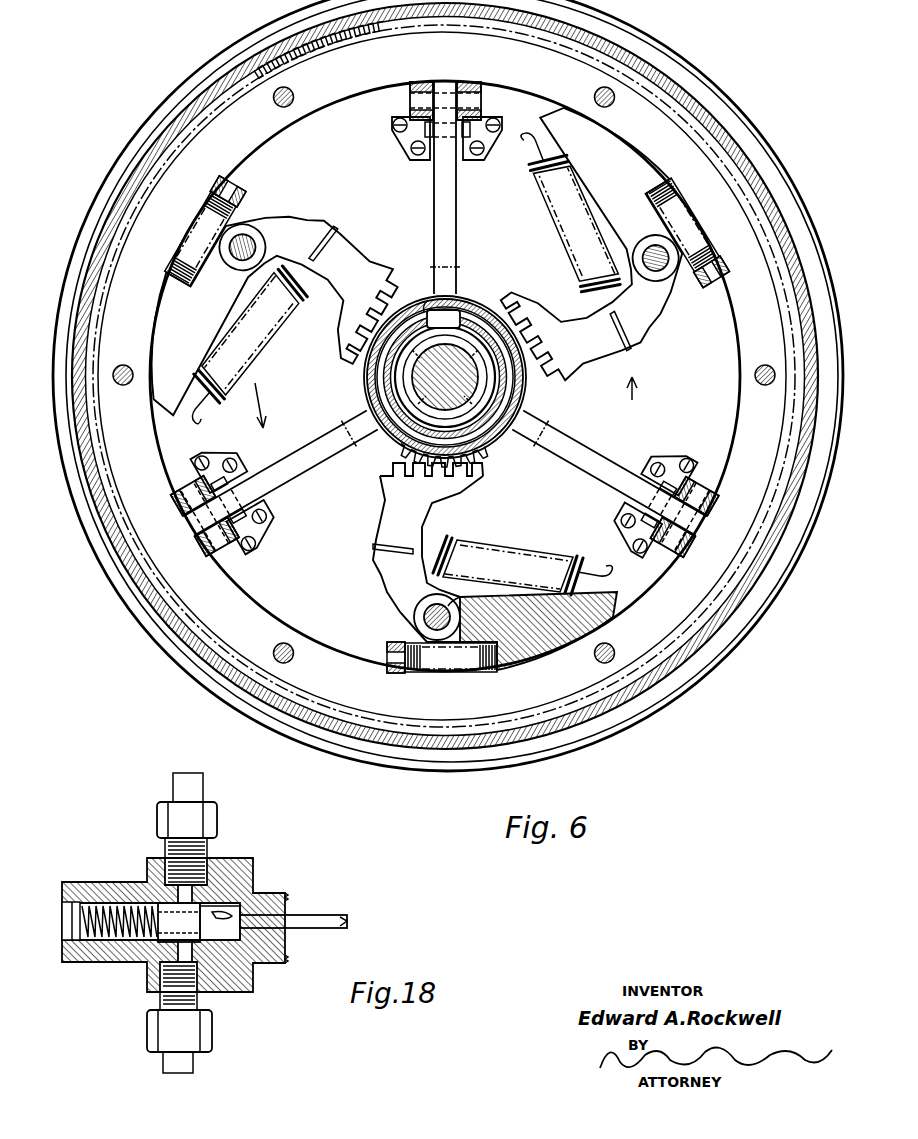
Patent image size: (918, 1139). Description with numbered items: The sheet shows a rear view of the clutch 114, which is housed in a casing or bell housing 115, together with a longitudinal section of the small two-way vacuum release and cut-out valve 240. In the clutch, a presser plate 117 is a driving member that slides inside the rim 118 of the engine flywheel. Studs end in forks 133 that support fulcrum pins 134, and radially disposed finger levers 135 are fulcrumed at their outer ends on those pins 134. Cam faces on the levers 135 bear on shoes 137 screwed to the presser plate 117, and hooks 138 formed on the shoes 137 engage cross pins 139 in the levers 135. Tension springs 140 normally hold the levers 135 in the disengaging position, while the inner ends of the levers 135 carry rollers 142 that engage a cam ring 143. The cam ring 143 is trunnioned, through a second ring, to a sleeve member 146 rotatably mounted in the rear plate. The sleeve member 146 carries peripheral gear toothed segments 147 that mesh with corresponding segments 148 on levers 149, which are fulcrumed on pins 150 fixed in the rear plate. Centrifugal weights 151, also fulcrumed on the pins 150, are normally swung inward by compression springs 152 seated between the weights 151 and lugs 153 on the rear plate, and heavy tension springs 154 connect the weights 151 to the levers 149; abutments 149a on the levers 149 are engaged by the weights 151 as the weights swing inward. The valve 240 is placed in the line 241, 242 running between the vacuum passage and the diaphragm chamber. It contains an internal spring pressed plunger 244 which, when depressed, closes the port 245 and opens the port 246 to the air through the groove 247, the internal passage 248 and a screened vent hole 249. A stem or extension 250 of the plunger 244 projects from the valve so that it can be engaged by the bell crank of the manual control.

In FIG. 6, the clutch 114 is at (222, 557).
In FIG. 6, the casing or bell housing 115 is at (258, 667).
In FIG. 6, the presser plate 117 is at (258, 580).
In FIG. 6, the rim 118 is at (328, 683).
In FIG. 6, the forks 133 is at (458, 74).
In FIG. 6, the fulcrum pins 134 is at (468, 109).
In FIG. 6, the finger levers 135 is at (468, 188).
In FIG. 6, the shoes 137 is at (401, 138).
In FIG. 6, the hooks 138 is at (482, 149).
In FIG. 6, the cross pins 139 is at (477, 121).
In FIG. 6, the tension springs 140 is at (467, 256).
In FIG. 6, the rollers 142 is at (455, 312).
In FIG. 6, the cam ring 143 is at (428, 298).
In FIG. 6, the sleeve member 146 is at (366, 380).
In FIG. 6, the peripheral gear toothed segments 147 is at (397, 452).
In FIG. 6, the segments 148 is at (482, 476).
In FIG. 6, the levers 149 is at (395, 575).
In FIG. 6, the abutments 149a is at (460, 594).
In FIG. 6, the pins 150 is at (424, 628).
In FIG. 6, the centrifugal weights 151 is at (548, 652).
In FIG. 6, the compression springs 152 is at (492, 675).
In FIG. 6, the lugs 153 is at (387, 660).
In FIG. 6, the heavy tension springs 154 is at (565, 550).
In FIG. 18, the two-way valve 240 is at (240, 992).
In FIG. 18, the line 241 is at (192, 1063).
In FIG. 18, the line 242 is at (198, 783).
In FIG. 18, the spring pressed plunger 244 is at (258, 916).
In FIG. 18, the port 245 is at (178, 945).
In FIG. 18, the port 246 is at (192, 892).
In FIG. 18, the groove 247 is at (240, 905).
In FIG. 18, the internal passage 248 is at (138, 890).
In FIG. 18, the screened vent hole 249 is at (62, 918).
In FIG. 18, the stem or extension 250 is at (325, 928).